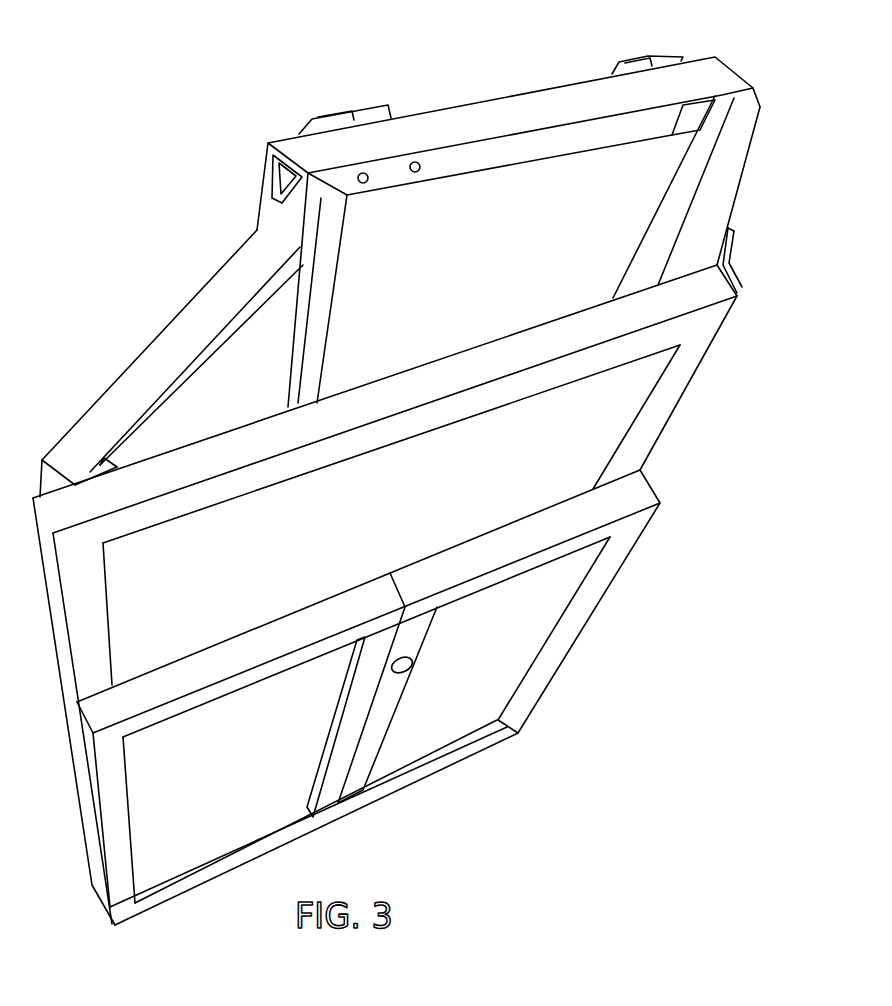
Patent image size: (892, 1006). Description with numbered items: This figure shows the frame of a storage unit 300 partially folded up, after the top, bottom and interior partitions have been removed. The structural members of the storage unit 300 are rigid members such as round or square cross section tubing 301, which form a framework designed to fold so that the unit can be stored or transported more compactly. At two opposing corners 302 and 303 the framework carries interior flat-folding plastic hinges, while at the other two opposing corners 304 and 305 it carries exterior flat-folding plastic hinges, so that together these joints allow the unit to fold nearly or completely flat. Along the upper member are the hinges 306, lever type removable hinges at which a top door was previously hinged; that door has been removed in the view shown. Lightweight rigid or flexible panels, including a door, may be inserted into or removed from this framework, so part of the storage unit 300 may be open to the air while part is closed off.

The storage unit 300 is at (148, 170).
The tubing 301 is at (168, 300).
The corner 302 is at (737, 282).
The corner 303 is at (273, 178).
The corner 304 is at (688, 128).
The corner 305 is at (90, 462).
The hinges 306 is at (333, 117).